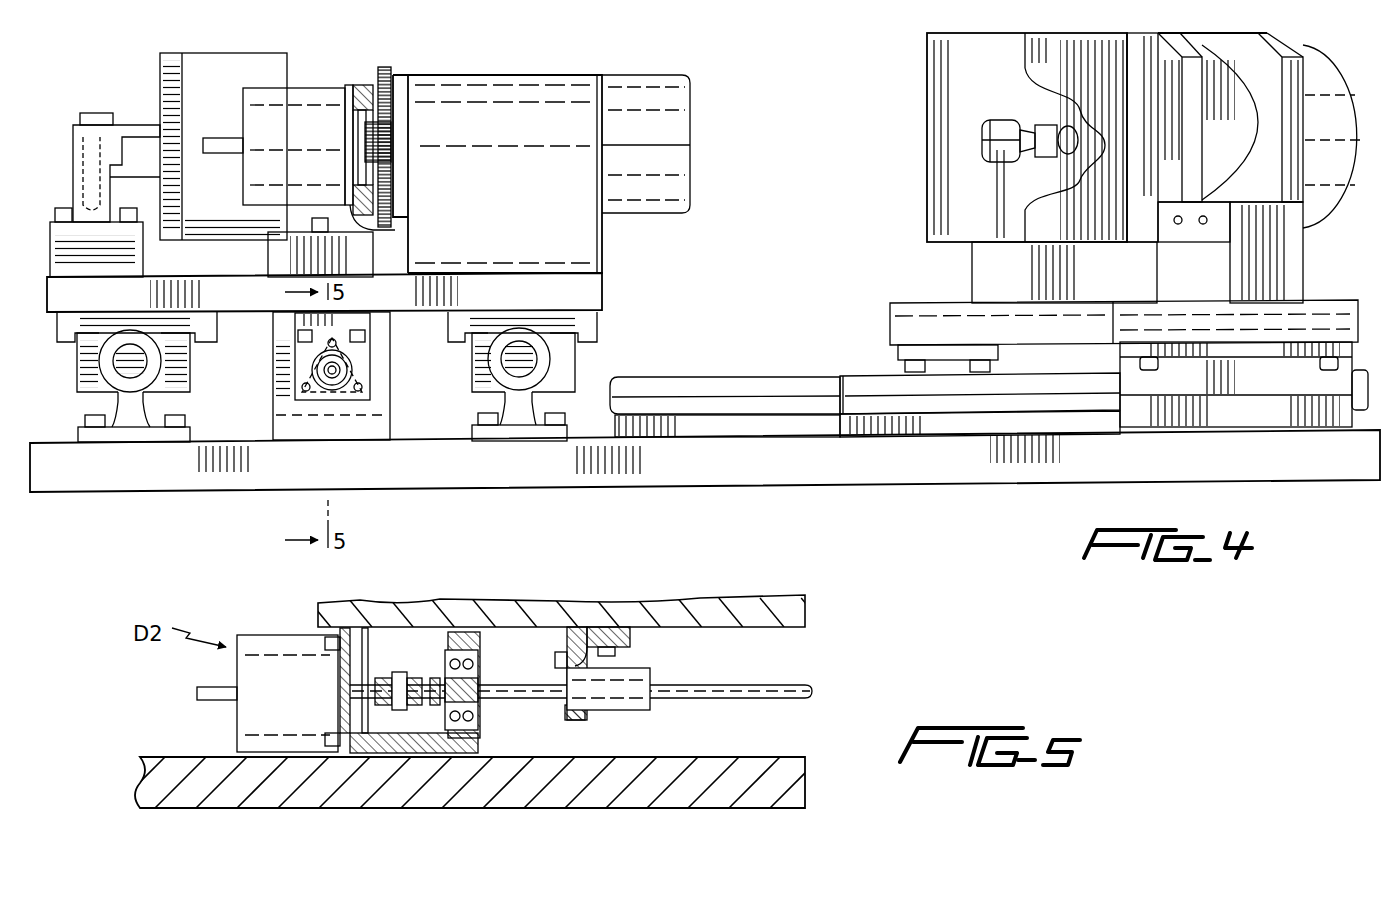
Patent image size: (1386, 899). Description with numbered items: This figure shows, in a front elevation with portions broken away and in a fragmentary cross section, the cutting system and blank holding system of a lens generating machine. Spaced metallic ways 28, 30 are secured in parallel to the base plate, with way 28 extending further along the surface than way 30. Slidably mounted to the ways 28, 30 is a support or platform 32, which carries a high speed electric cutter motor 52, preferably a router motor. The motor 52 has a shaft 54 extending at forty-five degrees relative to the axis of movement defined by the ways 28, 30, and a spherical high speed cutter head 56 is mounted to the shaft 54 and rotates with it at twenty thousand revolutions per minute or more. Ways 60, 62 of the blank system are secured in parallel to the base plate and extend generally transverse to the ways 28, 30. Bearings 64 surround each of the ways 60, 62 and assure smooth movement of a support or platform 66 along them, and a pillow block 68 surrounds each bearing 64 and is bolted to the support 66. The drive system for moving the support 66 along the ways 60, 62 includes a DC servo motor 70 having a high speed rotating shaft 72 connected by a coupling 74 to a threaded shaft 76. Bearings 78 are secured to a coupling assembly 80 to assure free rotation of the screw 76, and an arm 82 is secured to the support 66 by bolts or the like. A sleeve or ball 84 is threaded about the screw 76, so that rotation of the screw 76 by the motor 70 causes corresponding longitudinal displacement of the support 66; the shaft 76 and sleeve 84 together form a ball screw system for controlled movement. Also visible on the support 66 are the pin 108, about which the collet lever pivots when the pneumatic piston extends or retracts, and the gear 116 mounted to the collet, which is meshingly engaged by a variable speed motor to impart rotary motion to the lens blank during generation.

In FIG. 4, the way 28 is at (690, 377).
In FIG. 4, the way 30 is at (858, 377).
In FIG. 4, the support or platform 32 is at (1312, 300).
In FIG. 4, the high speed electric cutter motor 52 is at (1333, 191).
In FIG. 4, the shaft 54 is at (1076, 130).
In FIG. 4, the high speed cutter head 56 is at (1003, 112).
In FIG. 4, the way 60 is at (148, 358).
In FIG. 4, the way 62 is at (540, 357).
In FIG. 4, the bearing 64 is at (143, 342).
In FIG. 4, the support or platform 66 is at (592, 296).
In FIG. 5, the support or platform 66 is at (795, 612).
In FIG. 4, the pillow block 68 is at (178, 382).
In FIG. 5, the DC servo motor 70 is at (257, 643).
In FIG. 5, the high speed rotating shaft 72 is at (360, 690).
In FIG. 5, the coupling 74 is at (393, 672).
In FIG. 4, the threaded shaft 76 is at (335, 374).
In FIG. 5, the threaded shaft 76 is at (790, 683).
In FIG. 5, the bearings 78 is at (481, 655).
In FIG. 5, the coupling assembly 80 is at (420, 625).
In FIG. 4, the arm 82 is at (362, 310).
In FIG. 5, the arm 82 is at (598, 627).
In FIG. 4, the sleeve or ball 84 is at (348, 372).
In FIG. 5, the sleeve or ball 84 is at (630, 677).
In FIG. 4, the pin 108 is at (93, 112).
In FIG. 4, the gear 116 is at (390, 67).